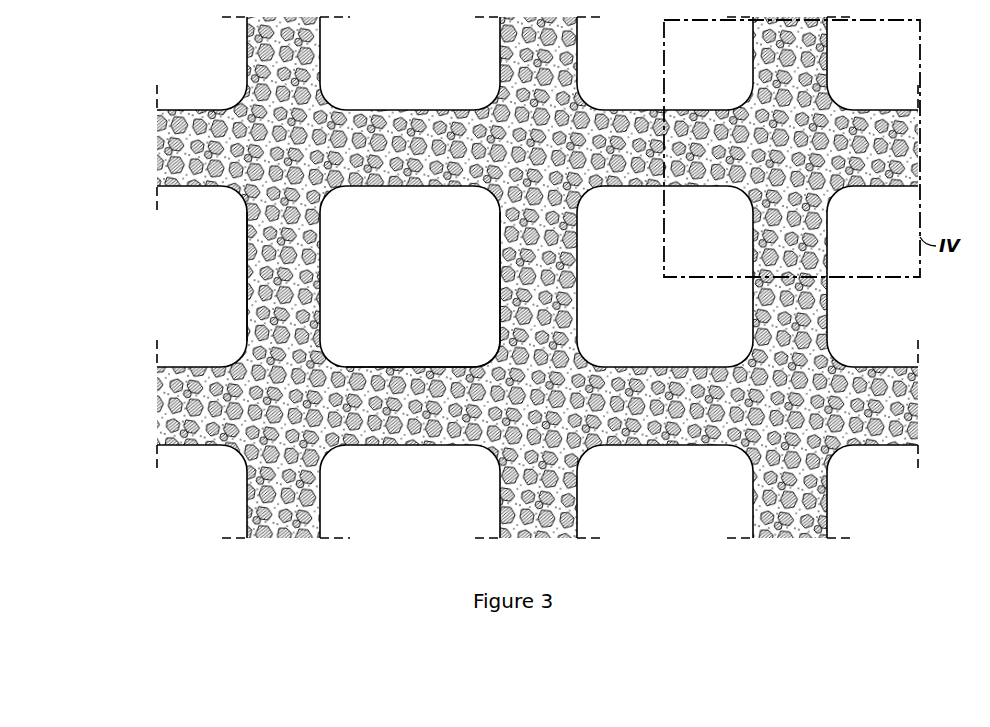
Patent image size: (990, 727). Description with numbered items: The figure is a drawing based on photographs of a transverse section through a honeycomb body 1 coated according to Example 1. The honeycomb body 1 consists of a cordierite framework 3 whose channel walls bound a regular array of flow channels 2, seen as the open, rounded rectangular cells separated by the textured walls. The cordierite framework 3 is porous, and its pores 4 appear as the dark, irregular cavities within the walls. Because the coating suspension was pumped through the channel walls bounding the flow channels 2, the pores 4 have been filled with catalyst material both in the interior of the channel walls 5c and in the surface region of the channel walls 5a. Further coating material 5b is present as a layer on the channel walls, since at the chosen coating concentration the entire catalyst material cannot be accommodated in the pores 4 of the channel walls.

The honeycomb body 1 is at (160, 231).
The flow channels 2 is at (404, 75).
The cordierite framework 3 is at (292, 275).
The pores 4 is at (290, 326).
The catalyst material in the surface region of the channel walls 5a is at (497, 305).
The coating on the channel walls 5b is at (483, 362).
The catalyst material in the interior of the channel walls 5c is at (407, 396).